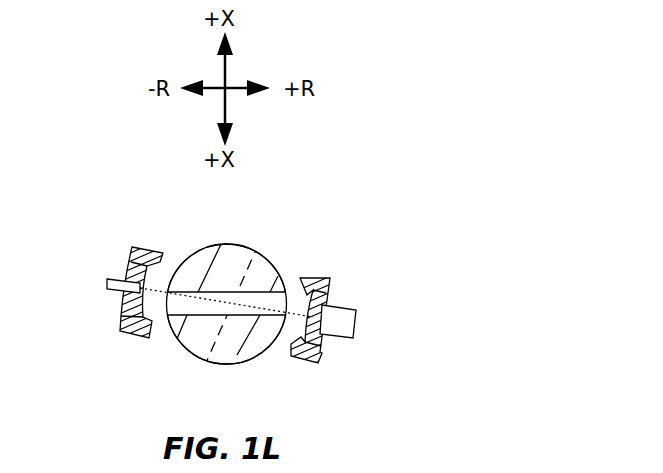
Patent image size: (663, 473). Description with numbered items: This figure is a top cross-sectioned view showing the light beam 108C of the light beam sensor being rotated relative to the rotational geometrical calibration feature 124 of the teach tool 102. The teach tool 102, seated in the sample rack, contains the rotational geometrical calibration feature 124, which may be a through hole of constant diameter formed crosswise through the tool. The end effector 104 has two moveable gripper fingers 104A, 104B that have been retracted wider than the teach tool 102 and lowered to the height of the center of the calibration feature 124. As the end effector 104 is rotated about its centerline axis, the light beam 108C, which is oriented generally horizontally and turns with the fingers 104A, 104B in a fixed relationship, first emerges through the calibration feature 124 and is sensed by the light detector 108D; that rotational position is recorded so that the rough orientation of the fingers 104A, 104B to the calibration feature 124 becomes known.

The teach tool 102 is at (181, 357).
The end effector 104 is at (94, 261).
The gripper finger 104A is at (128, 332).
The gripper finger 104B is at (323, 277).
The light beam 108C is at (222, 292).
The light detector 108D is at (347, 306).
The rotational geometrical calibration feature 124 is at (235, 315).